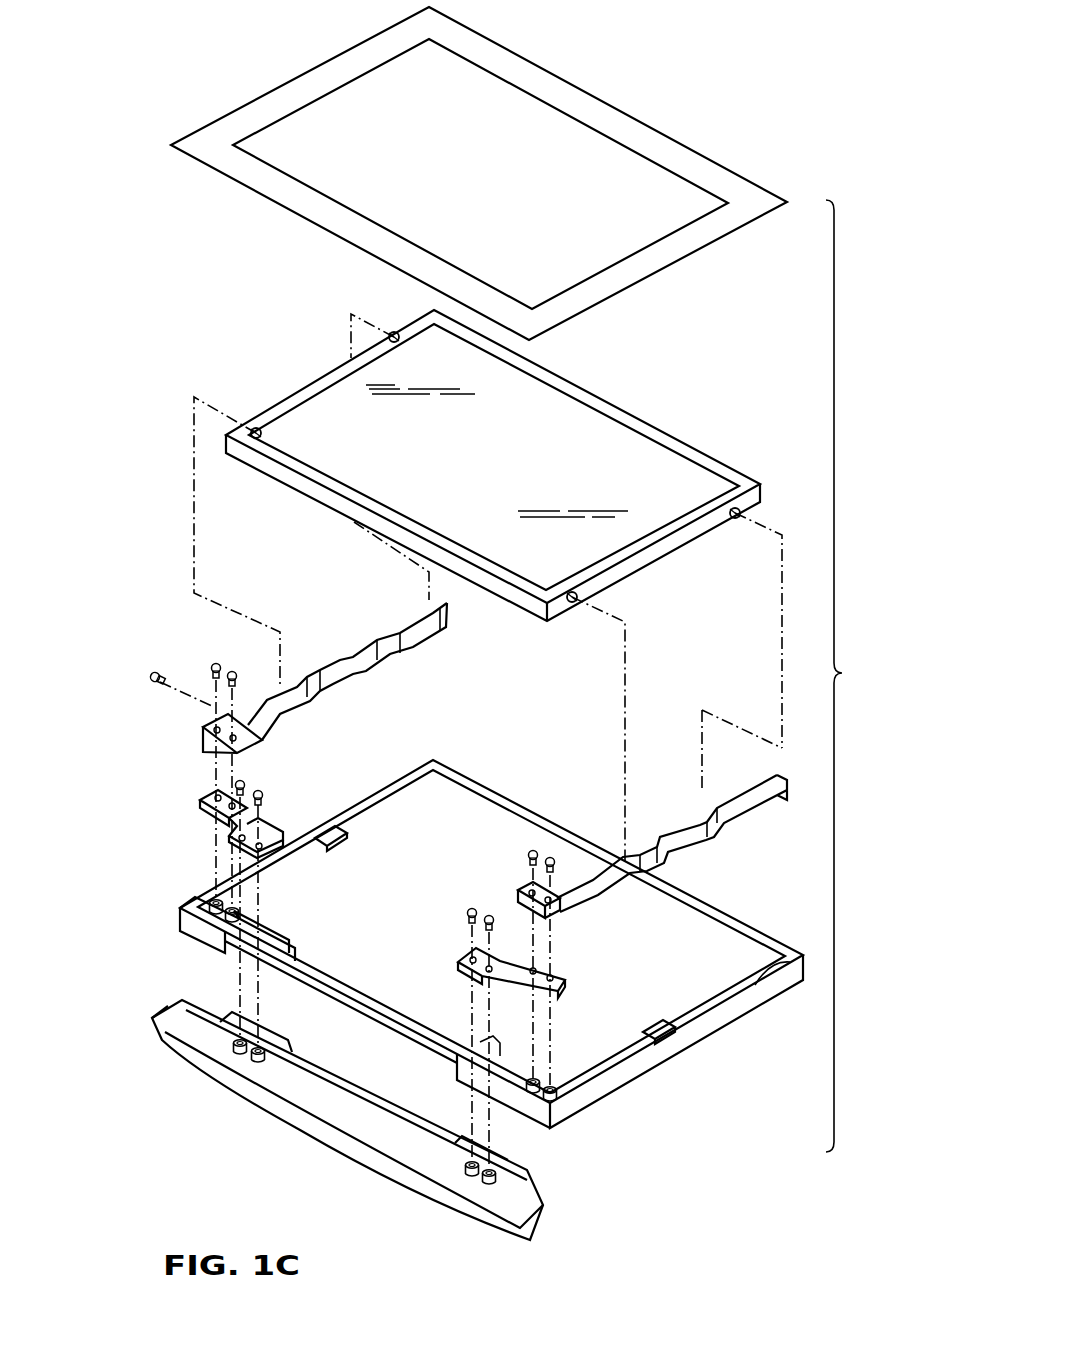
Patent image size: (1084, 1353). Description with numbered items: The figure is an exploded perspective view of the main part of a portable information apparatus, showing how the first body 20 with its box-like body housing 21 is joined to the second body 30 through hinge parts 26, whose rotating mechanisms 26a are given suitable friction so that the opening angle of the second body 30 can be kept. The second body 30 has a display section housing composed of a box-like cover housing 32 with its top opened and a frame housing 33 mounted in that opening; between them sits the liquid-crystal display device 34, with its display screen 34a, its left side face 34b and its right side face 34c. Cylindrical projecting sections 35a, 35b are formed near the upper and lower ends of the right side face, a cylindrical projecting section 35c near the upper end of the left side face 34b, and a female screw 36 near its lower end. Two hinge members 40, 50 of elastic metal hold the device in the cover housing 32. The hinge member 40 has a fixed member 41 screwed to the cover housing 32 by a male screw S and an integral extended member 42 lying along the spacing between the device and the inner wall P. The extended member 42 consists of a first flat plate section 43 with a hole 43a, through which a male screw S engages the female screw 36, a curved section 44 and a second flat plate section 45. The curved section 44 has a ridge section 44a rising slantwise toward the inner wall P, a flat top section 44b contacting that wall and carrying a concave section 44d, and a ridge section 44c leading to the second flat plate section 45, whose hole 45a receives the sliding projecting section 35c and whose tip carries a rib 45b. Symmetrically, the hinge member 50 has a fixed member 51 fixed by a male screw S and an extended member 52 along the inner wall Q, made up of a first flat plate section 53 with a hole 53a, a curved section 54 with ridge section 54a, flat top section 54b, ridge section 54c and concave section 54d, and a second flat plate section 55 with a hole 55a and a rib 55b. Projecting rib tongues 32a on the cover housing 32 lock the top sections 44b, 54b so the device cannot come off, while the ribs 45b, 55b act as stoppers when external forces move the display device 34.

The first body 20 is at (369, 1121).
The body housing 21 is at (538, 1228).
The hinge parts 26 is at (198, 805).
The rotating mechanisms 26a is at (268, 832).
The second body 30 is at (880, 688).
The cover housing 32 is at (665, 1047).
The projecting rib tongues 32a is at (335, 855).
The frame housing 33 is at (668, 265).
The liquid-crystal display device 34 is at (677, 447).
The display screen 34a is at (634, 437).
The left side face 34b is at (305, 383).
The right side face 34c is at (662, 545).
The cylindrical projecting section 35a is at (570, 603).
The cylindrical projecting section 35b is at (742, 508).
The cylindrical projecting section 35c is at (392, 331).
The female screw 36 is at (251, 424).
The hinge member 40 is at (408, 707).
The fixed member 41 is at (240, 757).
The extended member 42 is at (258, 745).
The first flat plate section 43 is at (270, 708).
The hole 43a is at (256, 712).
The curved section 44 is at (310, 680).
The ridge section 44a is at (300, 703).
The flat top section 44b is at (348, 660).
The ridge section 44c is at (366, 650).
The concave section 44d is at (333, 680).
The second flat plate section 45 is at (405, 640).
The hole 45a is at (415, 630).
The rib 45b is at (448, 606).
The hinge member 50 is at (780, 855).
The fixed member 51 is at (518, 915).
The extended member 52 is at (612, 893).
The first flat plate section 53 is at (562, 916).
The hole 53a is at (582, 902).
The curved section 54 is at (668, 860).
The ridge section 54a is at (645, 878).
The flat top section 54b is at (690, 840).
The ridge section 54c is at (712, 835).
The concave section 54d is at (676, 838).
The second flat plate section 55 is at (762, 800).
The hole 55a is at (748, 795).
The rib 55b is at (786, 778).
The male screw S is at (212, 665).
The inner wall P is at (385, 800).
The inner wall Q is at (770, 968).